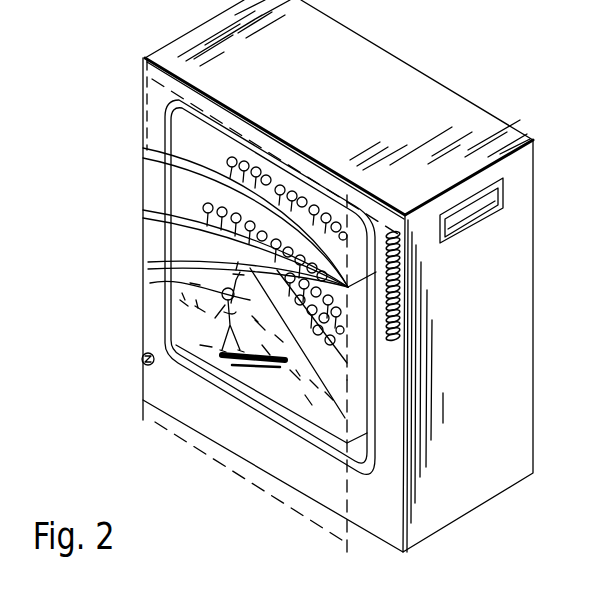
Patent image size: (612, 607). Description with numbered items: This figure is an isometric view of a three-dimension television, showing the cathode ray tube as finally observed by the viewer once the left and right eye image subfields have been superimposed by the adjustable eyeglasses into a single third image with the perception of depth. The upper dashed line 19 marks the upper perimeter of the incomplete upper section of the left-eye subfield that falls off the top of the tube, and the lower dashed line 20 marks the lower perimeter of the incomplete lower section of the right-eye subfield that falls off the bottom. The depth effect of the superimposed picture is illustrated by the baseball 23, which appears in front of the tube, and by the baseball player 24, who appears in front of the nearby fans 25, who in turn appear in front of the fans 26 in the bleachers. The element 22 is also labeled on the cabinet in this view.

The dashed line 19 is at (346, 193).
The dashed line 20 is at (345, 557).
The display window frame 22 is at (348, 287).
The baseball 23 is at (142, 352).
The baseball player 24 is at (215, 303).
The fans 25 is at (200, 224).
The fans in the bleachers 26 is at (198, 134).